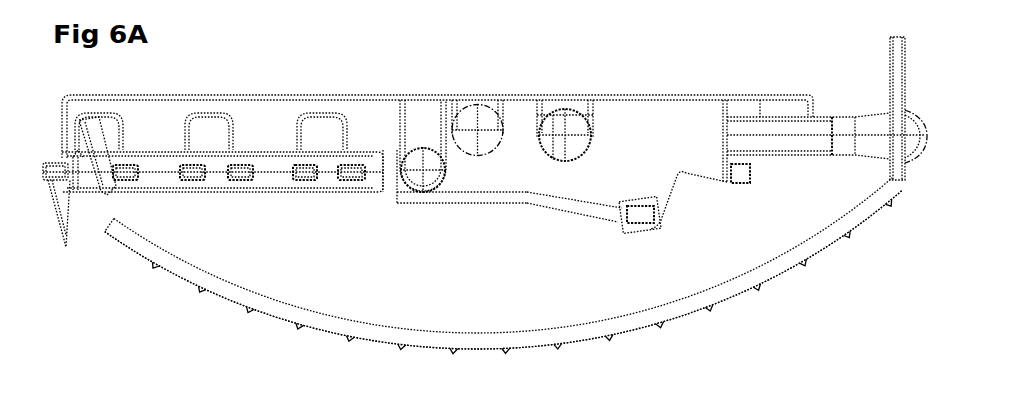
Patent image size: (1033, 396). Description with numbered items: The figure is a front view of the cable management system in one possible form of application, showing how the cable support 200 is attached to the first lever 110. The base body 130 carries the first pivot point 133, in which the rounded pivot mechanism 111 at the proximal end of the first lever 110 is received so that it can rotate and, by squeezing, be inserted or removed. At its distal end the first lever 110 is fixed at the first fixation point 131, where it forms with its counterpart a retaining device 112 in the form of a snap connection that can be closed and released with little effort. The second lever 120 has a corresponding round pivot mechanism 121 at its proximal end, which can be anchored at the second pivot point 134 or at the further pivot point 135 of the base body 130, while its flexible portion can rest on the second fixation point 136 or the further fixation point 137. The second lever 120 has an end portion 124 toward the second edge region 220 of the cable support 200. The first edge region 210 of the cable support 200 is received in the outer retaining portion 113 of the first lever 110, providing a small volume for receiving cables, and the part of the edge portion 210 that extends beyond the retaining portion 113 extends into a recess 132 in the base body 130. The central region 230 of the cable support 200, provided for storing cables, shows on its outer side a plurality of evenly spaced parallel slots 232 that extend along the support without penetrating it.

The first lever 110 is at (349, 196).
The pivot mechanism 111 is at (430, 184).
The retaining device 112 is at (60, 174).
The outer retaining portion 113 is at (113, 182).
The second lever 120 is at (807, 125).
The pivot mechanism 121 is at (560, 158).
The shaft end 124 is at (890, 150).
The base body 130 is at (677, 100).
The first fixation point 131 is at (58, 213).
The recess 132 is at (320, 132).
The first pivot point 133 is at (415, 152).
The second pivot point 134 is at (559, 118).
The further pivot point 135 is at (472, 118).
The second fixation point 136 is at (748, 186).
The further fixation point 137 is at (655, 222).
The cable support 200 is at (810, 252).
The first edge region 210 is at (112, 203).
The second edge region 220 is at (892, 83).
The central region 230 is at (512, 340).
The parallel slots 232 is at (330, 333).